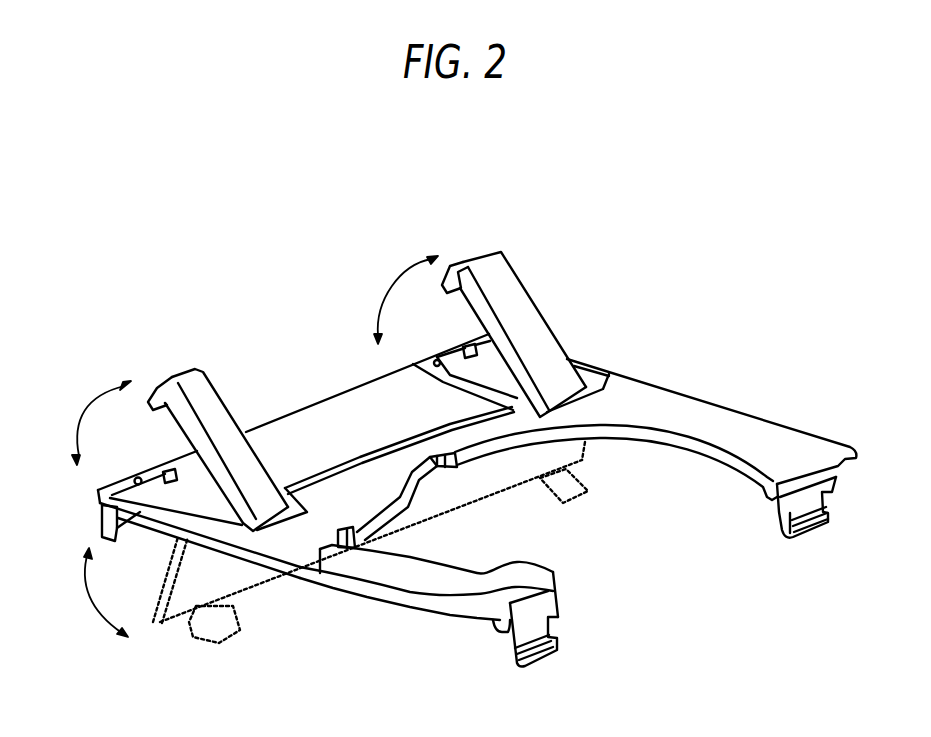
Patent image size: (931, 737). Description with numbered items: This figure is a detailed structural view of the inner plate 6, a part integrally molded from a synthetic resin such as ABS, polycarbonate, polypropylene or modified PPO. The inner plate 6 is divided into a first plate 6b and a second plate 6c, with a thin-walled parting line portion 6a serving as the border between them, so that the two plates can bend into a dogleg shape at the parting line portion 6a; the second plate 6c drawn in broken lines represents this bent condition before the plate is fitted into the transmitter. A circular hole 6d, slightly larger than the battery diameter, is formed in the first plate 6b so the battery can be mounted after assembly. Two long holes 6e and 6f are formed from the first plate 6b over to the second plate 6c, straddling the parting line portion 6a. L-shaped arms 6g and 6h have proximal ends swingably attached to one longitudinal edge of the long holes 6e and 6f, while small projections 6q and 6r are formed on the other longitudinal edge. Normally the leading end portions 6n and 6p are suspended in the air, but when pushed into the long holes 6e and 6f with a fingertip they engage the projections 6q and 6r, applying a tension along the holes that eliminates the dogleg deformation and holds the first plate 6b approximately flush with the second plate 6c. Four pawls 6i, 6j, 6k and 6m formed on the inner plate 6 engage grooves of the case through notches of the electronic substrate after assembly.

The inner plate 6 is at (644, 308).
The parting line portion 6a is at (328, 462).
The first plate 6b is at (688, 400).
The second plate 6c is at (355, 408).
The circular hole 6d is at (725, 450).
The long hole 6e is at (191, 503).
The long hole 6f is at (497, 388).
The L-shaped arm 6g is at (208, 398).
The L-shaped arm 6h is at (517, 280).
The pawl 6i is at (103, 517).
The pawl 6j is at (580, 503).
The pawl 6k is at (533, 660).
The pawl 6m is at (812, 532).
The leading end portion 6n is at (172, 380).
The leading end portion 6p is at (462, 258).
The projection 6q is at (140, 478).
The projection 6r is at (438, 364).